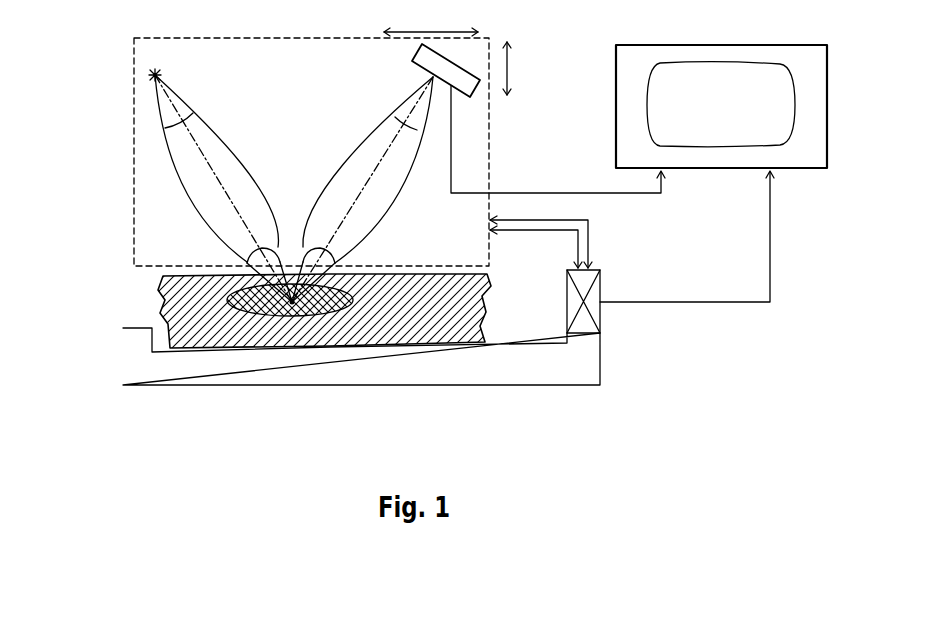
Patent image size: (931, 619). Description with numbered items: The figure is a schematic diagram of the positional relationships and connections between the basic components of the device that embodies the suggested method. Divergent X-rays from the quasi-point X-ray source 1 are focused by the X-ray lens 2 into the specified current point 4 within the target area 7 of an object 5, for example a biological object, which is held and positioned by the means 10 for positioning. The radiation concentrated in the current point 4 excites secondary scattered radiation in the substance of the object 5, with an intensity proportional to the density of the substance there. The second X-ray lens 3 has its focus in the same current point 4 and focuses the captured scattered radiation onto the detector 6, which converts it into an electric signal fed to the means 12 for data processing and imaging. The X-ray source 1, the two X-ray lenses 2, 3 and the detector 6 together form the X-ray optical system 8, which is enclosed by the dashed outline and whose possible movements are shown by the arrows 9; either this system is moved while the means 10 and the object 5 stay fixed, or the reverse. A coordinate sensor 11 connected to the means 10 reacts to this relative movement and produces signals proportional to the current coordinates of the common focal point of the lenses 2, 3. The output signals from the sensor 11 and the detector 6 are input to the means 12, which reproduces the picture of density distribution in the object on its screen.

The X-ray source 1 is at (150, 78).
The X-ray lens 2 is at (191, 165).
The second X-ray lens 3 is at (398, 173).
The current point 4 is at (190, 266).
The object 5 is at (163, 286).
The detector 6 is at (472, 92).
The target area 7 is at (292, 302).
The X-ray optical system 8 is at (465, 247).
The arrows 9 is at (521, 30).
The means for positioning 10 is at (150, 363).
The coordinate sensor 11 is at (600, 292).
The means for data processing and imaging 12 is at (673, 158).